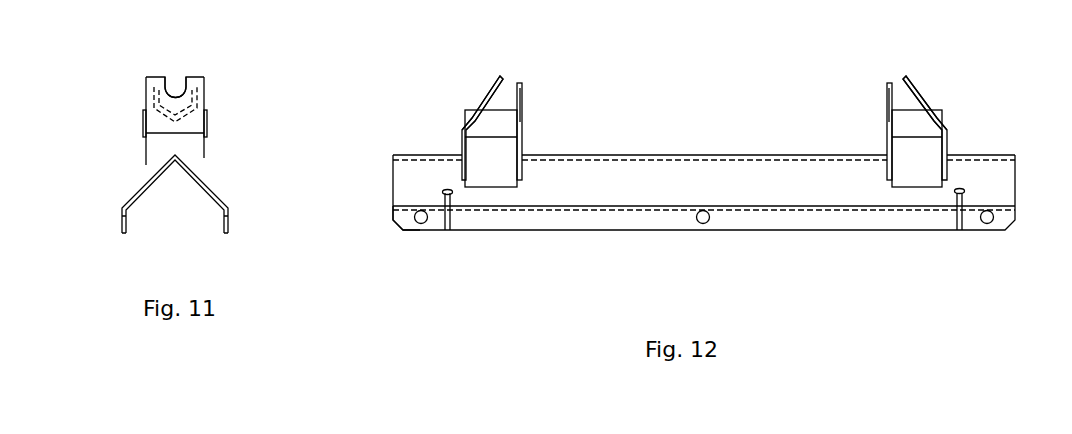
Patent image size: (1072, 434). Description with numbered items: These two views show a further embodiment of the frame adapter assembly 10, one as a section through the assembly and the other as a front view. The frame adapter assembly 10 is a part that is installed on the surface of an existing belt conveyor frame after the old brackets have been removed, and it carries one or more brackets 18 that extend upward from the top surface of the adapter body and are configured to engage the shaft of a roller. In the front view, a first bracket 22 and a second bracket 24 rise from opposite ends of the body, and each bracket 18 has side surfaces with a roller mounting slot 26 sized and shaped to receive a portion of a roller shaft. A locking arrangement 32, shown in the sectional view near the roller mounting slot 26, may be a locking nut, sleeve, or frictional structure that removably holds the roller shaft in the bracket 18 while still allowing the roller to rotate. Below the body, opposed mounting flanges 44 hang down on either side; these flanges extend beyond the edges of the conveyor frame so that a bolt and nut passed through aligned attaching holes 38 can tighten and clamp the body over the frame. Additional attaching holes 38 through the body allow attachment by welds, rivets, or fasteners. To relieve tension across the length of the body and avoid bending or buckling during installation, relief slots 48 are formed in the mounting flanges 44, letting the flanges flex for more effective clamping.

In FIG. 12, the frame adapter assembly 10 is at (699, 109).
In FIG. 11, the bracket 18 is at (121, 141).
In FIG. 12, the bracket 18 is at (555, 117).
In FIG. 12, the first bracket 22 is at (466, 108).
In FIG. 12, the second bracket 24 is at (940, 118).
In FIG. 11, the roller mounting slot 26 is at (175, 86).
In FIG. 11, the locking arrangement 32 is at (193, 97).
In FIG. 11, the attaching hole 38 is at (230, 213).
In FIG. 12, the attaching hole 38 is at (421, 224).
In FIG. 11, the mounting flange 44 is at (233, 237).
In FIG. 12, the mounting flange 44 is at (397, 231).
In FIG. 12, the relief slot 48 is at (452, 216).